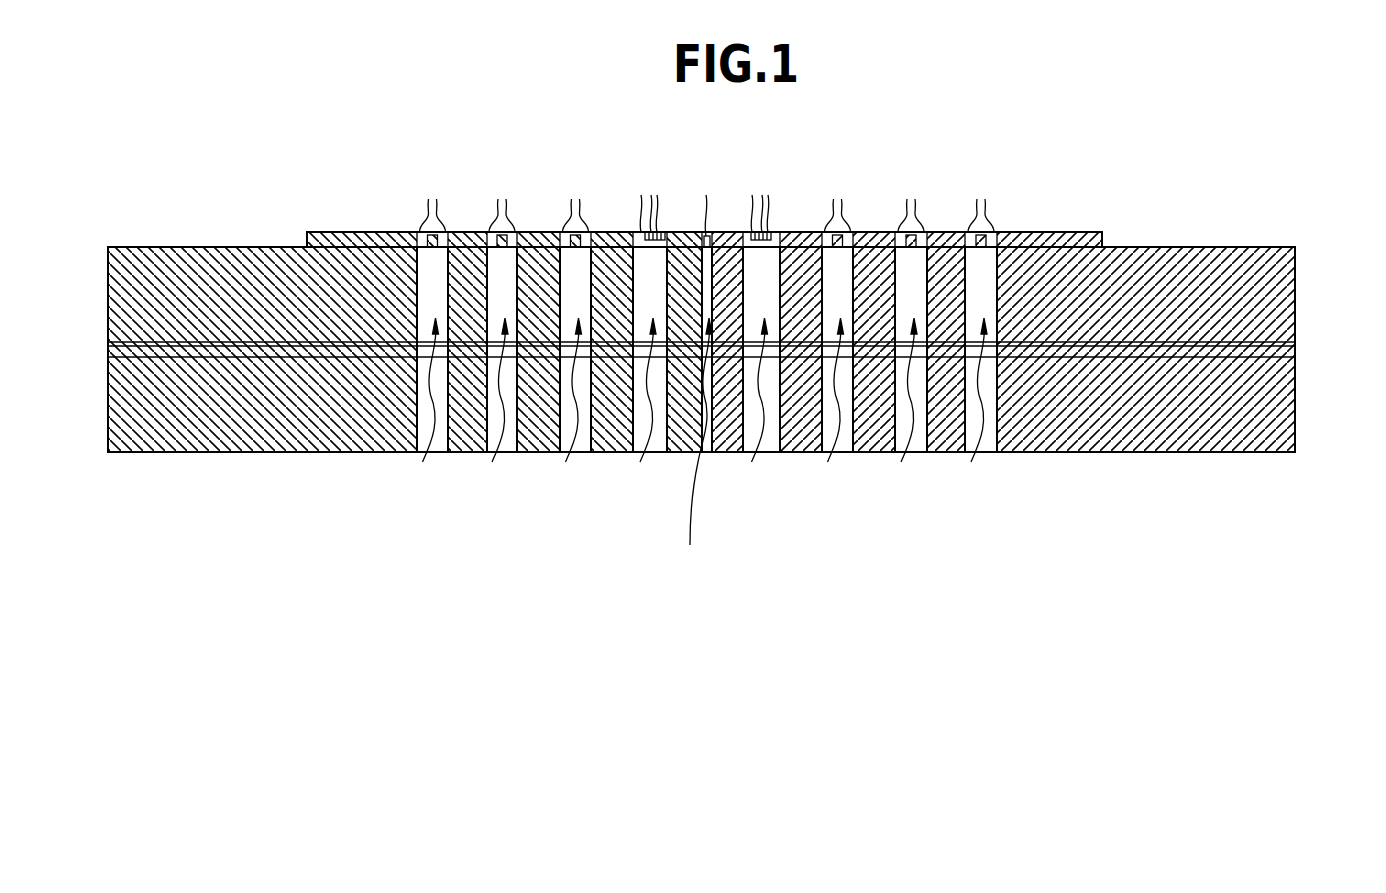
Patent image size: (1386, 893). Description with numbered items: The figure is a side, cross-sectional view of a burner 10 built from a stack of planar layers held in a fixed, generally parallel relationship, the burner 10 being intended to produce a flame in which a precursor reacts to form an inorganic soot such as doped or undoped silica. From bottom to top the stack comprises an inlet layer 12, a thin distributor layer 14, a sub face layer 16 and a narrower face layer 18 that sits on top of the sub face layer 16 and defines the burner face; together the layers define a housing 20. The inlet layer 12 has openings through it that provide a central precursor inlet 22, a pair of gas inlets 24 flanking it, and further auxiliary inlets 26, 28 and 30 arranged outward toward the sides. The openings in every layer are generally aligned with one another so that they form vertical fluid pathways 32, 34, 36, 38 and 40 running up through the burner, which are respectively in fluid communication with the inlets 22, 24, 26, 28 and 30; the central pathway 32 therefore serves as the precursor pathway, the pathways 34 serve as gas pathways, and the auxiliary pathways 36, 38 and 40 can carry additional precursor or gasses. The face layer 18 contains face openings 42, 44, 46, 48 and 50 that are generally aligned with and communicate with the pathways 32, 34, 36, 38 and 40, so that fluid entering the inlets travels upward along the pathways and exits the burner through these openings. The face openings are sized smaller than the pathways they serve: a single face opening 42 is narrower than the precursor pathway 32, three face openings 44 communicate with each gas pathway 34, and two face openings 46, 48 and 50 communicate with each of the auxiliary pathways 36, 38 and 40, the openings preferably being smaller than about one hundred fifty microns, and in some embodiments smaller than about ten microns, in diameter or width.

The burner 10 is at (1140, 188).
The inlet layer 12 is at (1295, 436).
The distributor layer 14 is at (1295, 366).
The sub face layer 16 is at (1295, 277).
The face layer 18 is at (1102, 232).
The housing 20 is at (78, 362).
The precursor inlet 22 is at (706, 445).
The gas inlets 24 is at (660, 432).
The auxiliary inlet 26 is at (583, 432).
The auxiliary inlet 28 is at (511, 432).
The auxiliary inlet 30 is at (440, 432).
The precursor pathway 32 is at (695, 447).
The gas pathways 34 is at (694, 404).
The fluid pathway 36 is at (694, 404).
The fluid pathway 38 is at (695, 404).
The fluid pathway 40 is at (695, 404).
The face opening 42 is at (706, 208).
The face openings 44 is at (702, 204).
The face openings 46 is at (707, 210).
The face openings 48 is at (706, 210).
The face openings 50 is at (707, 210).